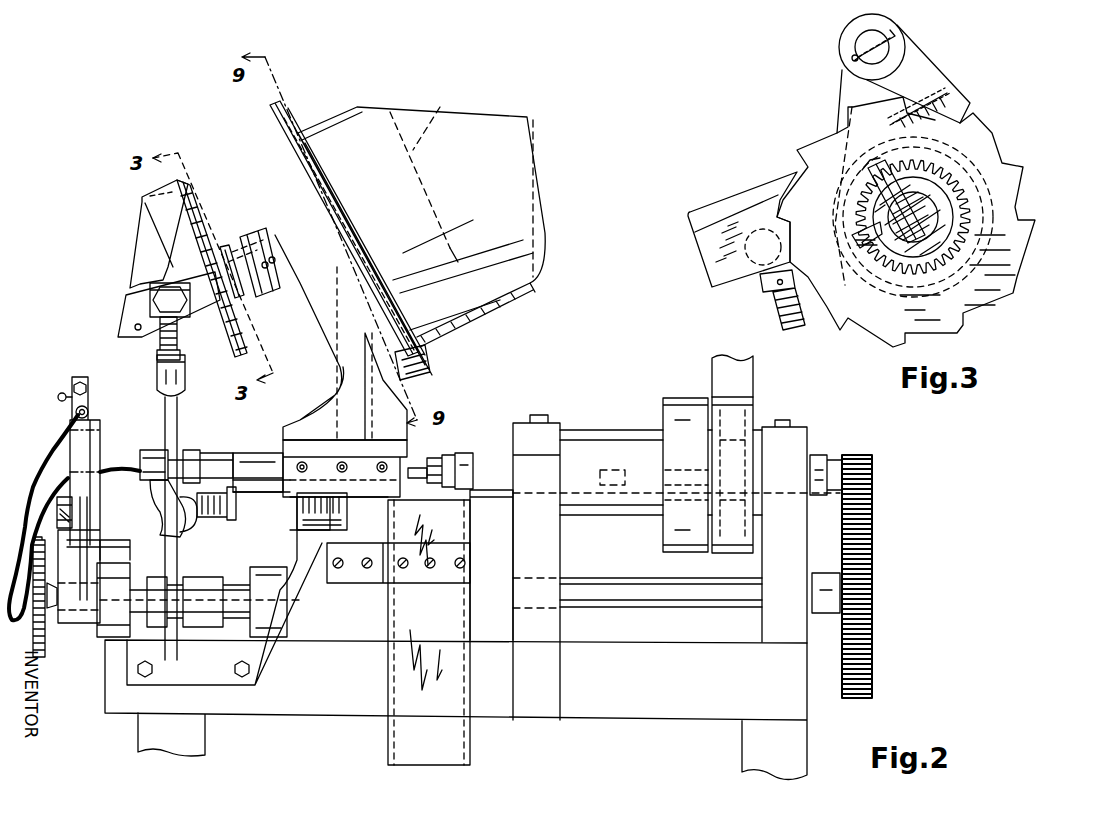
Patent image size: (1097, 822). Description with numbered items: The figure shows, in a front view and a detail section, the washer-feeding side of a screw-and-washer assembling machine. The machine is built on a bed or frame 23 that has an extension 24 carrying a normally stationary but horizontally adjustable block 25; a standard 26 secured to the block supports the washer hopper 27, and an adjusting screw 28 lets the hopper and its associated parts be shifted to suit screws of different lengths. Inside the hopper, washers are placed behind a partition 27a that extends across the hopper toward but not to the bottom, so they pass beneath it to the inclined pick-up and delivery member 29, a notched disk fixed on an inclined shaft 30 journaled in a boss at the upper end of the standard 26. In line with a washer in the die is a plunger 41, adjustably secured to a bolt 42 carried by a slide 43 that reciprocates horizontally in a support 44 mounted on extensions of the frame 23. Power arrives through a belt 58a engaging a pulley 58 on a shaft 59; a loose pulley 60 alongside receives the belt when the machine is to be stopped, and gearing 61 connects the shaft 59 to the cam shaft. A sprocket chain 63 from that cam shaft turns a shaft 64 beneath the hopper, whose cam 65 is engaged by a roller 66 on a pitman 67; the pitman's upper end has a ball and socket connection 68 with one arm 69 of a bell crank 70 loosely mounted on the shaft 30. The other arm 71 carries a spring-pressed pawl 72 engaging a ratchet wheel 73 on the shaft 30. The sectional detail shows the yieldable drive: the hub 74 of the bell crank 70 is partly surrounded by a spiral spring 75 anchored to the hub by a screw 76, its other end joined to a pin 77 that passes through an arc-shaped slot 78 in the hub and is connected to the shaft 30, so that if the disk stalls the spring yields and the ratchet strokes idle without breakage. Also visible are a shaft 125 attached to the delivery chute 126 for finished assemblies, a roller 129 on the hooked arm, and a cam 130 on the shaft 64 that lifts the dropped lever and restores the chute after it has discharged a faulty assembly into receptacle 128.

In FIG. 2, the bed or frame 23 is at (679, 700).
In FIG. 2, the extension 24 is at (283, 470).
In FIG. 2, the block 25 is at (405, 432).
In FIG. 2, the standard 26 is at (332, 337).
In FIG. 2, the hopper 27 is at (538, 235).
In FIG. 2, the partition 27a is at (446, 106).
In FIG. 2, the adjusting screw 28 is at (265, 508).
In FIG. 2, the pick-up and delivery member 29 is at (292, 123).
In FIG. 3, the inclined shaft 30 is at (955, 195).
In FIG. 2, the plunger 41 is at (420, 467).
In FIG. 2, the bolt 42 is at (446, 457).
In FIG. 2, the slide 43 is at (514, 450).
In FIG. 2, the support 44 is at (587, 440).
In FIG. 2, the pulley 58 is at (736, 553).
In FIG. 2, the belt 58a is at (718, 380).
In FIG. 2, the shaft 59 is at (820, 457).
In FIG. 2, the loose pulley 60 is at (676, 553).
In FIG. 2, the gearing 61 is at (875, 545).
In FIG. 2, the sprocket chain 63 is at (37, 657).
In FIG. 2, the shaft 64 is at (137, 623).
In FIG. 2, the cam 65 is at (190, 628).
In FIG. 2, the roller 66 is at (177, 533).
In FIG. 2, the pitman 67 is at (165, 418).
In FIG. 2, the ball and socket connection 68 is at (150, 305).
In FIG. 3, the ball and socket connection 68 is at (768, 280).
In FIG. 3, the arm 69 is at (728, 200).
In FIG. 2, the bell crank 70 is at (182, 345).
In FIG. 2, the arm 71 is at (160, 220).
In FIG. 3, the arm 71 is at (845, 85).
In FIG. 2, the pawl 72 is at (195, 230).
In FIG. 3, the pawl 72 is at (935, 75).
In FIG. 2, the ratchet wheel 73 is at (205, 253).
In FIG. 3, the ratchet wheel 73 is at (985, 150).
In FIG. 3, the hub 74 is at (972, 222).
In FIG. 2, the spiral spring 75 is at (250, 225).
In FIG. 3, the spiral spring 75 is at (975, 235).
In FIG. 3, the screw 76 is at (857, 253).
In FIG. 3, the pin 77 is at (880, 210).
In FIG. 3, the arc-shaped slot 78 is at (888, 222).
In FIG. 2, the shaft 125 is at (100, 533).
In FIG. 2, the delivery chute 126 is at (470, 746).
In FIG. 2, the receptacle 128 is at (33, 488).
In FIG. 2, the roller 129 is at (57, 517).
In FIG. 2, the cam 130 is at (67, 553).